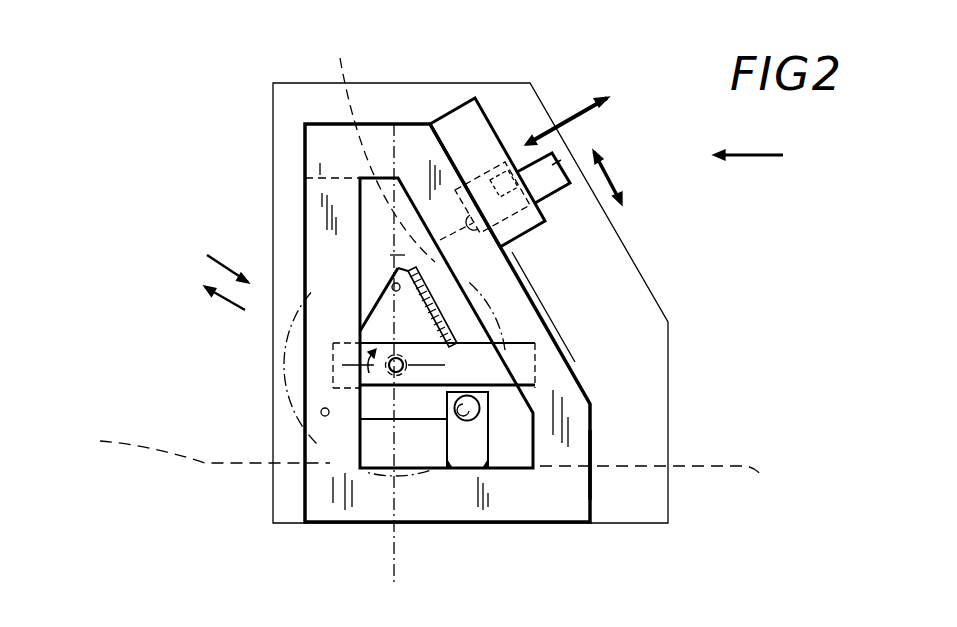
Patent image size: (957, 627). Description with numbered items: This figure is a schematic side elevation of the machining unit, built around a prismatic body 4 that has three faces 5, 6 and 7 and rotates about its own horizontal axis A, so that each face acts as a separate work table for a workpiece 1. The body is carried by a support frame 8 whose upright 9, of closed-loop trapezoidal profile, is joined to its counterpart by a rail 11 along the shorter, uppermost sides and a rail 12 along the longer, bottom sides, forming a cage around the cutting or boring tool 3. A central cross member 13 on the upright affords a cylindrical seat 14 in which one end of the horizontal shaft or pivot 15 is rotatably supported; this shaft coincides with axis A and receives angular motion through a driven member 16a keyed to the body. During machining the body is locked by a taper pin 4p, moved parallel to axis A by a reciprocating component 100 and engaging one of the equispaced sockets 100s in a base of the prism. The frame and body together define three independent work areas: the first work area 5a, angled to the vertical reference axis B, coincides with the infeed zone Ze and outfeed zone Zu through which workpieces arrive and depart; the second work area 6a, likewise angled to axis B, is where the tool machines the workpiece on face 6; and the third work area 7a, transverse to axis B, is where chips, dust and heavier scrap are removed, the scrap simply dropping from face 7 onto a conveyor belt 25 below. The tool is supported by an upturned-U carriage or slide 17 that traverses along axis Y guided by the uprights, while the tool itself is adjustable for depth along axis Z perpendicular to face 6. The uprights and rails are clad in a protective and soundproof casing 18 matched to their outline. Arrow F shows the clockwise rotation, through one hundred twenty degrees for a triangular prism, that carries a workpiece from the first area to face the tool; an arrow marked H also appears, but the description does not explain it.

The workpiece 1 is at (455, 292).
The cutting or boring tool 3 is at (505, 197).
The prismatic body 4 is at (375, 441).
The taper pin 4p is at (462, 412).
The first face of the prismatic body 5 is at (361, 281).
The first work area 5a is at (360, 314).
The second face of the prismatic body 6 is at (405, 265).
The second work area 6a is at (422, 260).
The third face of the prismatic body 7 is at (412, 430).
The third work area 7a is at (370, 403).
The support frame 8 is at (593, 496).
The upright 9 is at (335, 195).
The rail 11 is at (332, 137).
The rail 12 is at (551, 470).
The cross member 13 is at (487, 378).
The cylindrical seat 14 is at (435, 340).
The horizontal shaft or pivot 15 is at (432, 322).
The driven member 16a is at (355, 450).
The carriage or slide 17 is at (485, 175).
The protective and soundproof casing 18 is at (636, 524).
The conveyor belt 25 is at (431, 456).
The reciprocating component 100 is at (467, 422).
The equispaced sockets 100s is at (347, 273).
The horizontal axis A is at (384, 371).
The reference axis B is at (380, 143).
The arrow indicating rotation F is at (345, 368).
The direction H is at (760, 149).
The axis Y is at (616, 177).
The axis Z is at (578, 114).
The infeed zone Ze is at (205, 259).
The outfeed zone Zu is at (204, 289).